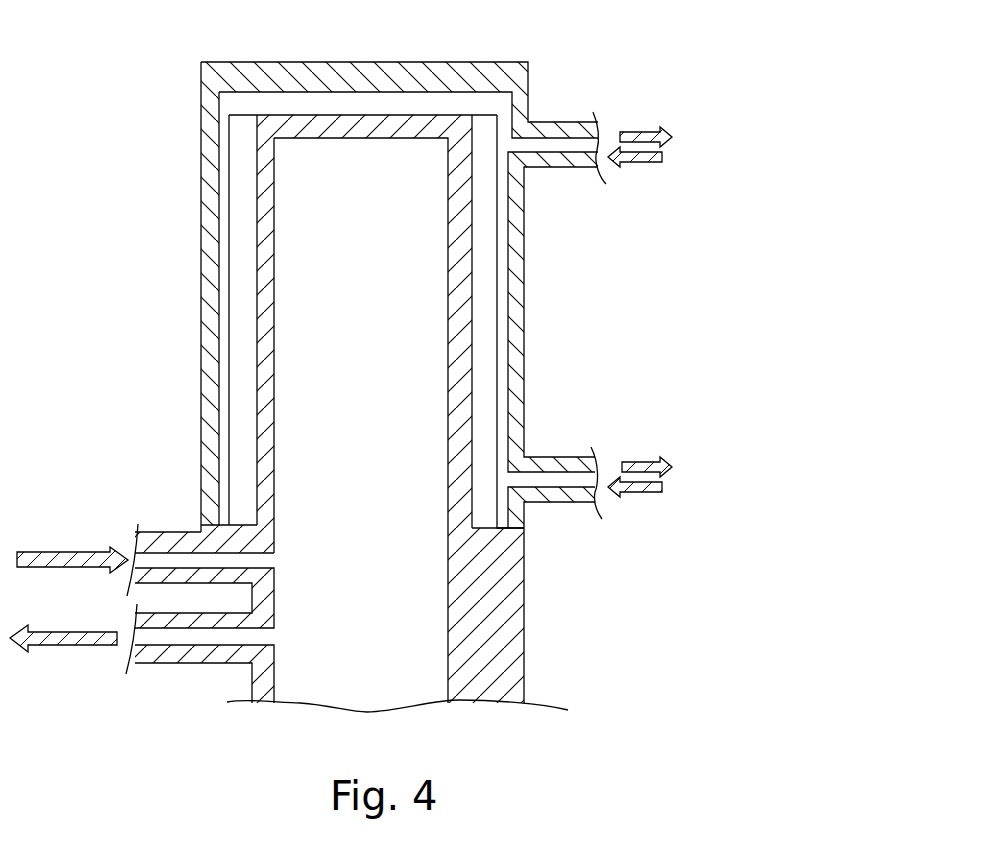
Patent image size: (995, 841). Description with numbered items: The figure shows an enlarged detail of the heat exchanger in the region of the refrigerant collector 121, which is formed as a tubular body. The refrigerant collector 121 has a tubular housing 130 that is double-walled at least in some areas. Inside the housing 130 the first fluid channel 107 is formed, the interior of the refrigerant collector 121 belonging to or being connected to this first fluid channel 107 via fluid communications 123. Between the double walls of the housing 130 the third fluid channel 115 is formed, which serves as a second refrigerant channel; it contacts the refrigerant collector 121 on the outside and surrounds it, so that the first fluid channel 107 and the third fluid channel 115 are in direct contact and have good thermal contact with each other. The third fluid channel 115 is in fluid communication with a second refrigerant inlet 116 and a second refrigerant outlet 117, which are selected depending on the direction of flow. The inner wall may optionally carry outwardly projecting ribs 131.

The first fluid channel 107 is at (375, 673).
The third fluid channel 115 is at (485, 309).
The second refrigerant inlet 116 is at (553, 148).
The second refrigerant outlet 117 is at (572, 479).
The refrigerant collector 121 is at (308, 225).
The fluid communications 123 is at (173, 553).
The tubular housing 130 is at (183, 188).
The outwardly projecting ribs 131 is at (485, 241).